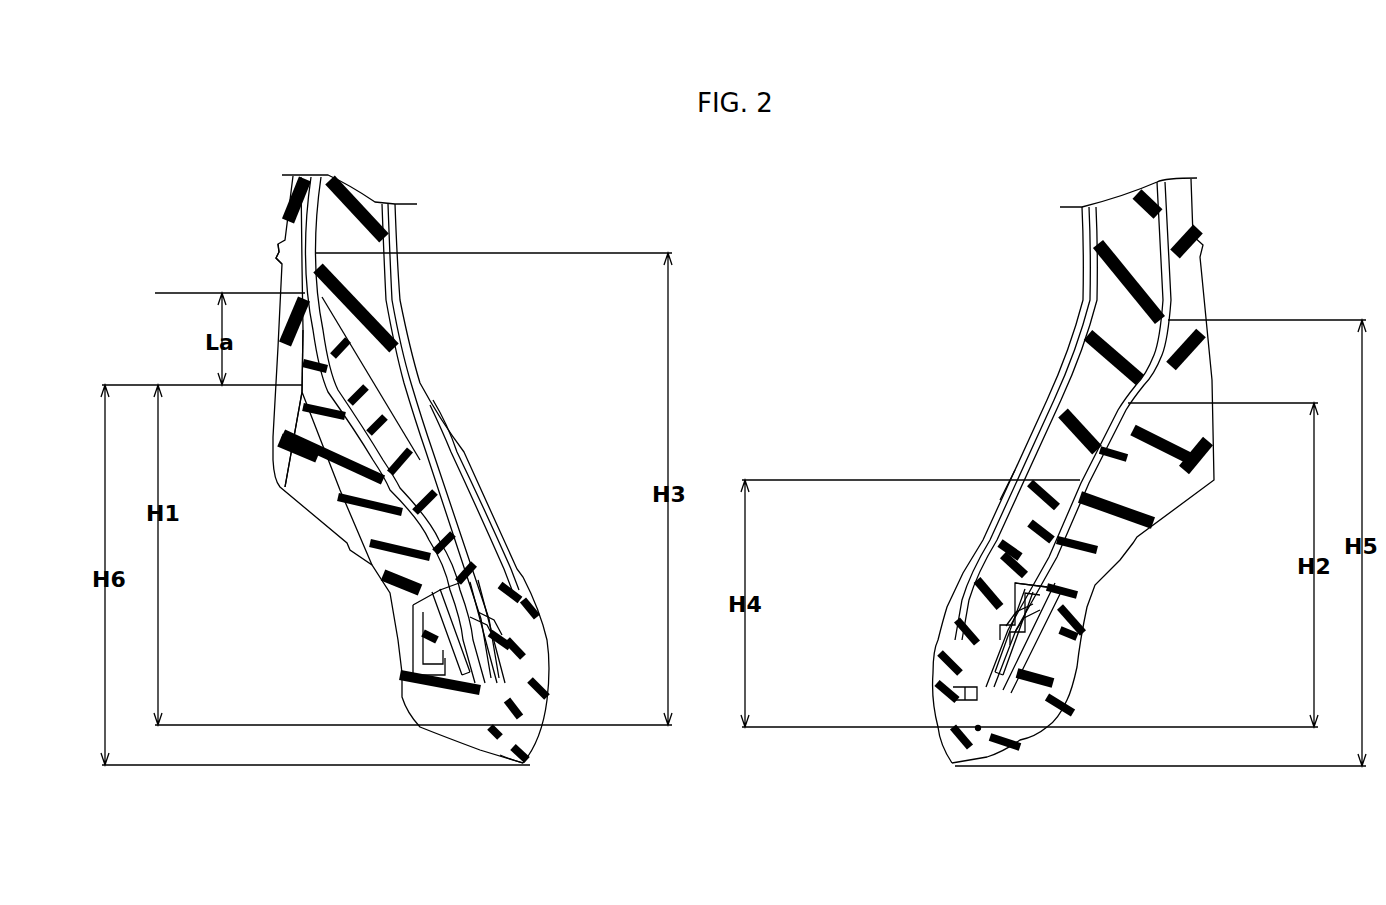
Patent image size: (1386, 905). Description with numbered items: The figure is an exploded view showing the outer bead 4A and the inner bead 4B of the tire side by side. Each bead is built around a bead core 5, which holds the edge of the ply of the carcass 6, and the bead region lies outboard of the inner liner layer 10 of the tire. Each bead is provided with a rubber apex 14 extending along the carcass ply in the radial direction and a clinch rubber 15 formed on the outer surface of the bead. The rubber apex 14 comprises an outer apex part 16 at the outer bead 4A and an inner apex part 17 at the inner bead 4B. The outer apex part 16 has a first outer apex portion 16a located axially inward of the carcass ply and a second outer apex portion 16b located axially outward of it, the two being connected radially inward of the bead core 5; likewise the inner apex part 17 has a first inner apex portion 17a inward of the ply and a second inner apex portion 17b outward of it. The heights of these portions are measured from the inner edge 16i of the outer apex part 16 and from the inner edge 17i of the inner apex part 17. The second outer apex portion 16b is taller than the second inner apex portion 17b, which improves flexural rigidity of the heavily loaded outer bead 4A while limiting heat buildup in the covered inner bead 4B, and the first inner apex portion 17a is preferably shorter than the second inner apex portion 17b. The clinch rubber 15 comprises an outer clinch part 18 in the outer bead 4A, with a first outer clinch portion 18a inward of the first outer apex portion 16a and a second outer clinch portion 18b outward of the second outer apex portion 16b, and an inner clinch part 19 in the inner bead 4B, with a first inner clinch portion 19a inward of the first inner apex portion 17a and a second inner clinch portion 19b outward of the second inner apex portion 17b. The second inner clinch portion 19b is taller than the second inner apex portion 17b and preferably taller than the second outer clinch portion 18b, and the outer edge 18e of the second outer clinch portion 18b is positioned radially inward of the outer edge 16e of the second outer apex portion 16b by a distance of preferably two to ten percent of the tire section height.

The outer bead 4A is at (259, 203).
The inner bead 4B is at (1239, 214).
The bead core 5 is at (493, 639).
The carcass 6 is at (440, 558).
The inner liner layer 10 is at (410, 366).
The rubber apex 14 is at (553, 398).
The clinch rubber 15 is at (278, 598).
The outer apex part 16 is at (475, 391).
The first outer apex portion 16a is at (440, 510).
The second outer apex portion 16b is at (350, 438).
The outer edge of the second outer apex portion 16e is at (303, 293).
The inner edge of the outer apex part 16i is at (523, 763).
The inner apex part 17 is at (906, 513).
The first inner apex portion 17a is at (1003, 574).
The second inner apex portion 17b is at (1077, 530).
The inner edge of the inner apex part 17i is at (978, 728).
The outer clinch part 18 is at (337, 618).
The first outer clinch portion 18a is at (533, 713).
The second outer clinch portion 18b is at (410, 621).
The outer edge of the second outer clinch portion 18e is at (300, 386).
The inner clinch part 19 is at (1150, 624).
The first inner clinch portion 19a is at (982, 726).
The second inner clinch portion 19b is at (1073, 611).